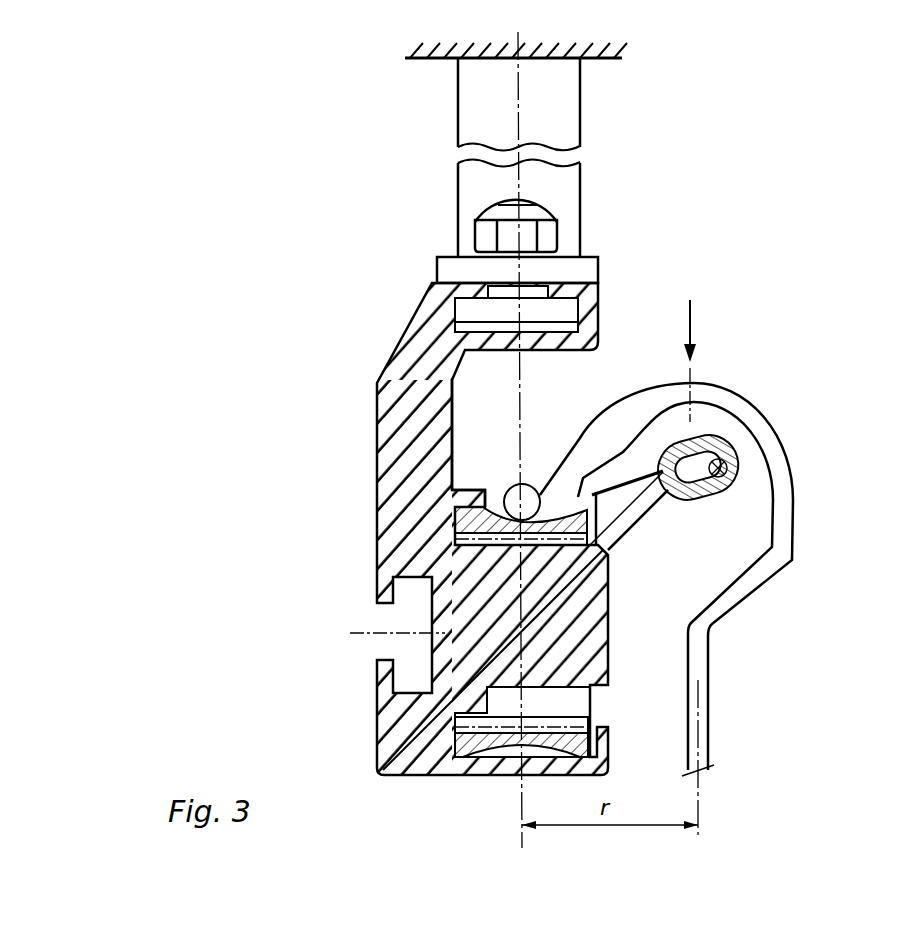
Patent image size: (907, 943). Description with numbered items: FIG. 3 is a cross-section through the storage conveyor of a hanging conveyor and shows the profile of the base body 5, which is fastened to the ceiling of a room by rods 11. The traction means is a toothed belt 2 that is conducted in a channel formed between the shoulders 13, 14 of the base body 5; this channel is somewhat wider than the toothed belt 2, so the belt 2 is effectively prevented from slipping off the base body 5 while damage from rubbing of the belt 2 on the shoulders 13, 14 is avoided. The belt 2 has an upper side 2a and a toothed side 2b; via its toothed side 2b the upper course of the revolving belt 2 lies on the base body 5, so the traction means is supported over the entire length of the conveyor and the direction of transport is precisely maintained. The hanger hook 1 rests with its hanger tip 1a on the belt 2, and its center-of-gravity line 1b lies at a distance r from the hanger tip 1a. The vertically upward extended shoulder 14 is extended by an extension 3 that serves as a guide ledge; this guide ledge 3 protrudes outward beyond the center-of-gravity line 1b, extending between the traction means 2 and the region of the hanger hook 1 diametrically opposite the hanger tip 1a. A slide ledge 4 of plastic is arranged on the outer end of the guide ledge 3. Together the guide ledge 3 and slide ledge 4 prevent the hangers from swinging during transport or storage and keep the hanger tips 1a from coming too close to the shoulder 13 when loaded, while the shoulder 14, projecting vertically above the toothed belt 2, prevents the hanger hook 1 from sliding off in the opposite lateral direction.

The hanger hook 1 is at (728, 405).
The hanger tip 1a is at (512, 496).
The center-of-gravity line of the hanger hook 1b is at (691, 344).
The toothed belt 2 is at (470, 753).
The upper clamping jaw 2a is at (482, 486).
The toothed side of the belt 2b is at (548, 543).
The extension / guide ledge 3 is at (737, 478).
The slide ledge 4 is at (728, 445).
The base body 5 is at (397, 395).
The rods 11 is at (565, 182).
The shoulder 13 is at (456, 430).
The shoulder 14 is at (612, 461).